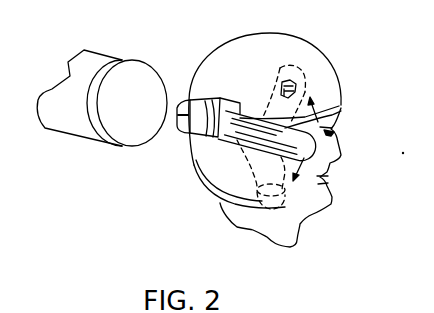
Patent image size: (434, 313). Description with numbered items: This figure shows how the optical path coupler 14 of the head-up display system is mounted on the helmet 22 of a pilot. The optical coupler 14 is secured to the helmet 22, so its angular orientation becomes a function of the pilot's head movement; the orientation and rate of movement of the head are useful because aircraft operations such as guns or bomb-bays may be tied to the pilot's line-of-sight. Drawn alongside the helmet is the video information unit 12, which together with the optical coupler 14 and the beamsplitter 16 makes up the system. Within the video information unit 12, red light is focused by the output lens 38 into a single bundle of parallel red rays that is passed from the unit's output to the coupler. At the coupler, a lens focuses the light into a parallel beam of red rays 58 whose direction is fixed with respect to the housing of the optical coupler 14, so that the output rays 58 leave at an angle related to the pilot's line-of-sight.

The video information unit 12 is at (106, 51).
The optical path coupler 14 is at (241, 153).
The beamsplitter 16 is at (280, 70).
The helmet 22 is at (298, 43).
The output lens 38 is at (127, 133).
The parallel beam of red rays 58 is at (136, 105).